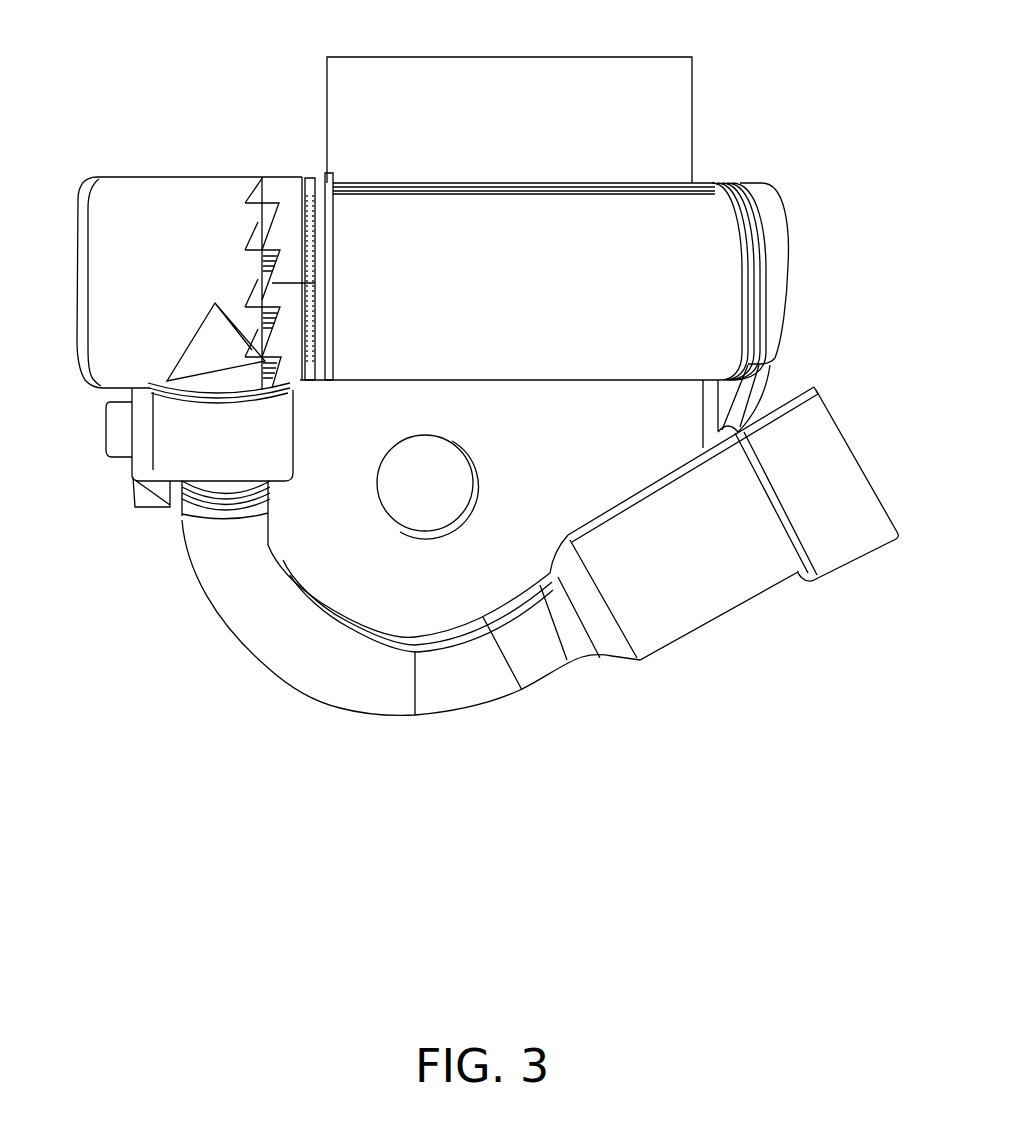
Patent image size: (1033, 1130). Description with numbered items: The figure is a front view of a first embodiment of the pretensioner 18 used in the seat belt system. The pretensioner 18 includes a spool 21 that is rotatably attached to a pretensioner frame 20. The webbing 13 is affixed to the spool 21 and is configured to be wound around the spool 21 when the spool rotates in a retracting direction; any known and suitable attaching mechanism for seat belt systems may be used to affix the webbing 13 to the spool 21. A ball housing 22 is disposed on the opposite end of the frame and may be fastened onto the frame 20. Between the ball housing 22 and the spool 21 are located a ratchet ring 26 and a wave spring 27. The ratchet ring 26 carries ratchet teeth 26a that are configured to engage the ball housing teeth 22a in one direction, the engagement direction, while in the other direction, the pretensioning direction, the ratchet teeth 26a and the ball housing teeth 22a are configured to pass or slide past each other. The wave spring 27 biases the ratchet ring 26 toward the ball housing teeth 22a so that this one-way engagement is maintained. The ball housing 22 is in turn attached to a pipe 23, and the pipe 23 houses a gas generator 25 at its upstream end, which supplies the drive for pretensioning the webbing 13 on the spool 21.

The pretensioner 18 is at (136, 62).
The webbing 13 is at (668, 86).
The pretensioner frame 20 is at (780, 262).
The spool 21 is at (728, 183).
The ball housing 22 is at (113, 352).
The ball housing teeth 22a is at (248, 237).
The pipe 23 is at (459, 676).
The gas generator 25 is at (835, 467).
The ratchet ring 26 is at (287, 192).
The ratchet teeth 26a is at (272, 378).
The wave spring 27 is at (310, 210).